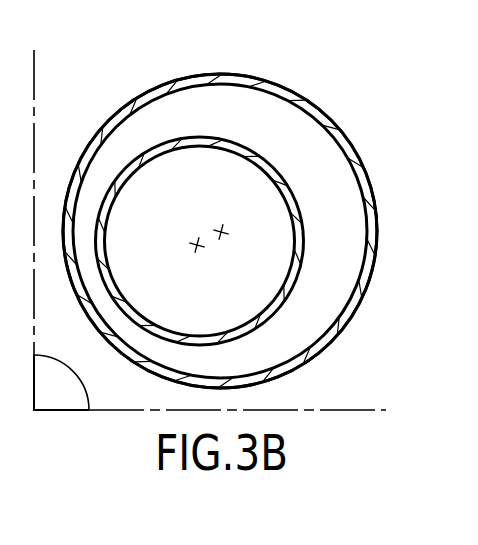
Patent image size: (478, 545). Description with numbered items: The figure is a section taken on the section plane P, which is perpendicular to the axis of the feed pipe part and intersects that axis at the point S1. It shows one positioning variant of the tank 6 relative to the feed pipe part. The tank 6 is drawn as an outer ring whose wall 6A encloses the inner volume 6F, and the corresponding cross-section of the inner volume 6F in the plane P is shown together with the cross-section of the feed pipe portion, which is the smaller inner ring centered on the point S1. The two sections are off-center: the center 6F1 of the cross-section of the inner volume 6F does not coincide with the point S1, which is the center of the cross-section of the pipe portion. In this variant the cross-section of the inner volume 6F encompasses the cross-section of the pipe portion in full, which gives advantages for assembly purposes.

The tank 6 is at (186, 74).
The tank wall 6A is at (377, 211).
The inner volume 6F is at (327, 173).
The center of the corresponding cross-section of the inner volume 6F1 is at (222, 228).
The point where plane P intersects axis S S1 is at (194, 247).
The section plane P is at (61, 382).